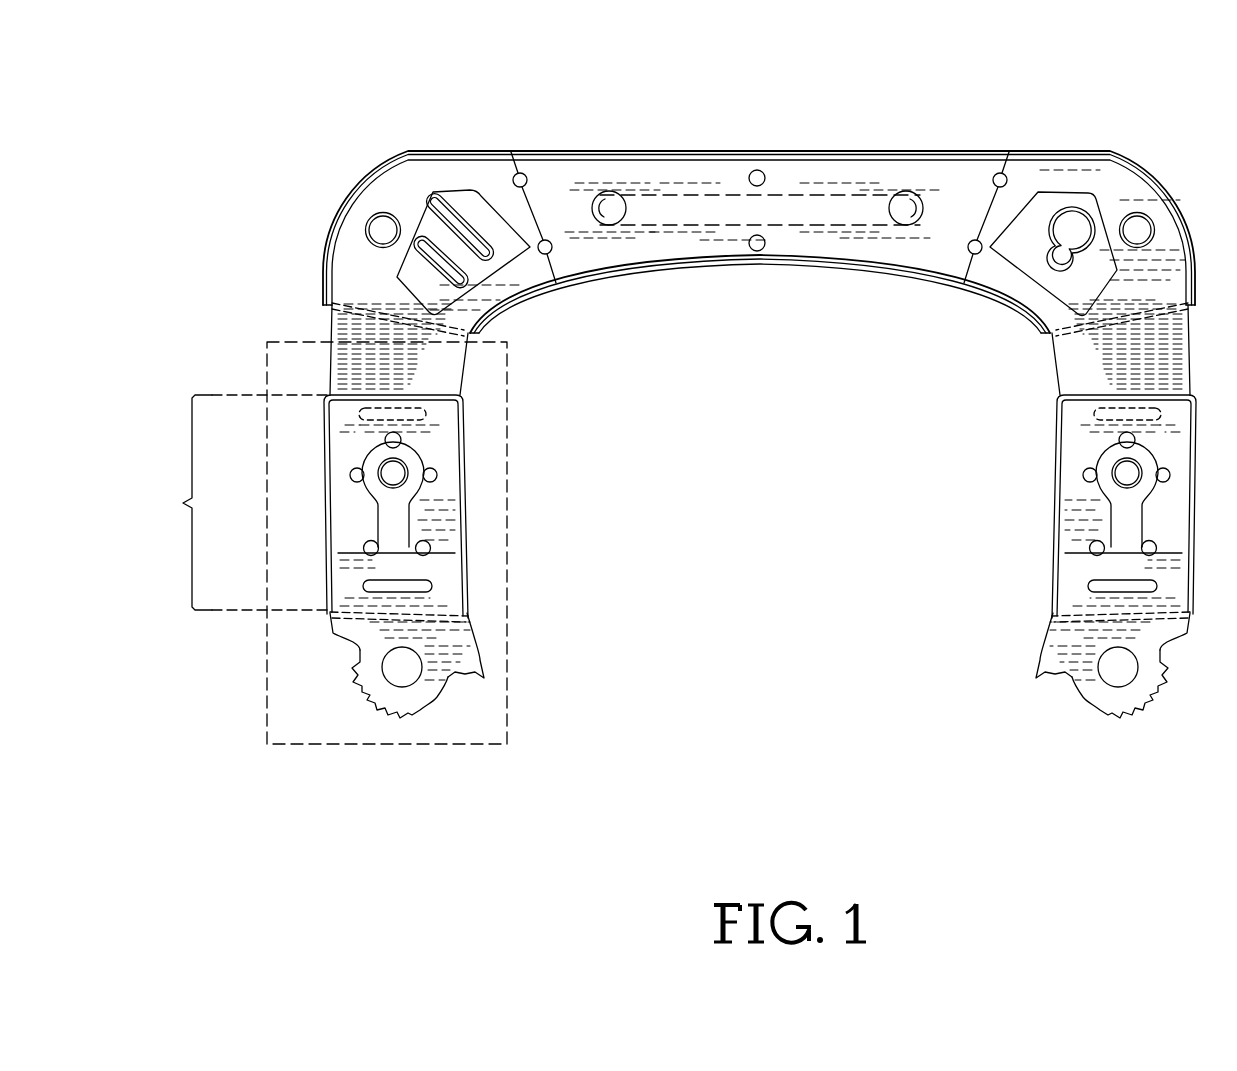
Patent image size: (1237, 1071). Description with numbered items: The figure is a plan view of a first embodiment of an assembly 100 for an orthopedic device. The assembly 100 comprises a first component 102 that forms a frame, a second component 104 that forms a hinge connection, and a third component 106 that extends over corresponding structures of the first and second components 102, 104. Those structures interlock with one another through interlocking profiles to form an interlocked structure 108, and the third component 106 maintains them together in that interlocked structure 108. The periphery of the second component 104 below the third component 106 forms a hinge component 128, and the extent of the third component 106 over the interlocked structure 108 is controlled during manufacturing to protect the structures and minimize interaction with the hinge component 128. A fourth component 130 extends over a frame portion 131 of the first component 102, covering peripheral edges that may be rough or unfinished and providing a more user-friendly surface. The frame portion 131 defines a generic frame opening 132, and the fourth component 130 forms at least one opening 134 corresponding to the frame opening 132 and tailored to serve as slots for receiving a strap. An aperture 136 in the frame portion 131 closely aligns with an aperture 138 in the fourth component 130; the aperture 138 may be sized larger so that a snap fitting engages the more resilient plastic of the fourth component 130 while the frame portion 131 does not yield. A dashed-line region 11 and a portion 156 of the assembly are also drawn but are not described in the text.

The assembly 100 is at (705, 413).
The first component 102 is at (432, 352).
The second component 104 is at (487, 647).
The third component 106 is at (463, 457).
The interlocked structure 108 is at (233, 502).
The detail region 11 is at (507, 733).
The hinge component 128 is at (358, 692).
The fourth component 130 is at (672, 240).
The frame portion 131 is at (598, 152).
The frame opening 132 is at (480, 200).
The opening 134 is at (427, 195).
The aperture 136 is at (383, 222).
The aperture 138 is at (327, 250).
The right arm portion 156 is at (1100, 352).